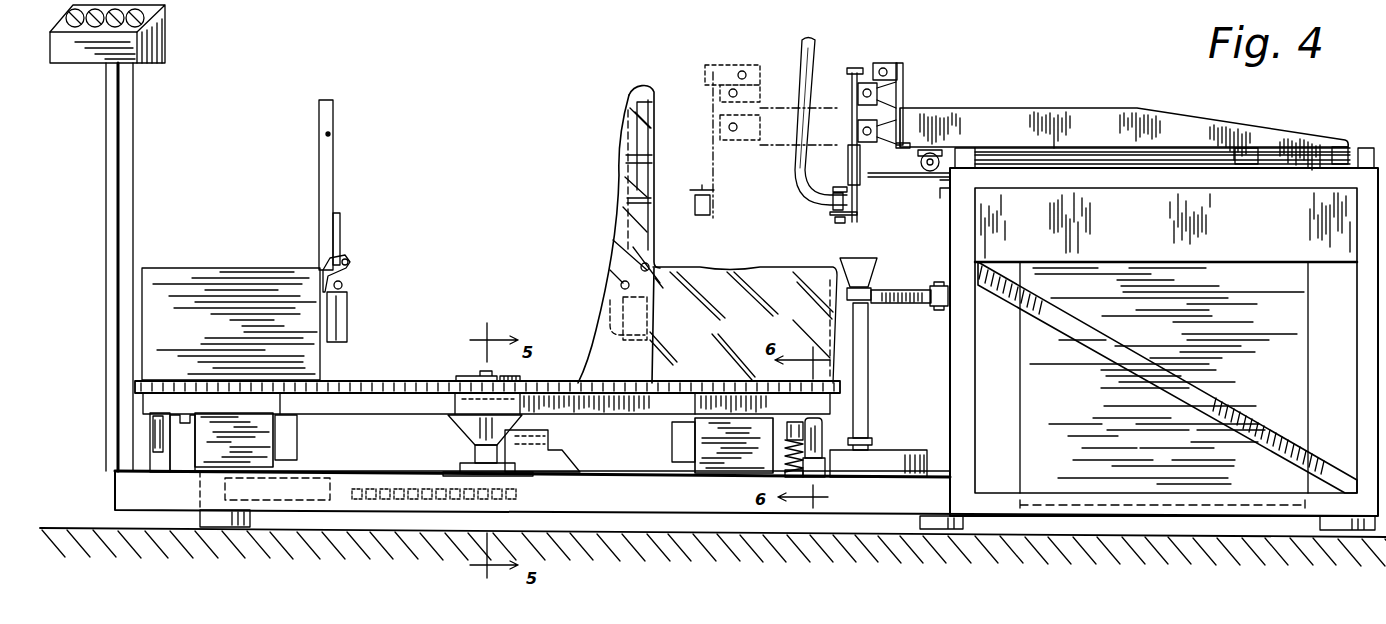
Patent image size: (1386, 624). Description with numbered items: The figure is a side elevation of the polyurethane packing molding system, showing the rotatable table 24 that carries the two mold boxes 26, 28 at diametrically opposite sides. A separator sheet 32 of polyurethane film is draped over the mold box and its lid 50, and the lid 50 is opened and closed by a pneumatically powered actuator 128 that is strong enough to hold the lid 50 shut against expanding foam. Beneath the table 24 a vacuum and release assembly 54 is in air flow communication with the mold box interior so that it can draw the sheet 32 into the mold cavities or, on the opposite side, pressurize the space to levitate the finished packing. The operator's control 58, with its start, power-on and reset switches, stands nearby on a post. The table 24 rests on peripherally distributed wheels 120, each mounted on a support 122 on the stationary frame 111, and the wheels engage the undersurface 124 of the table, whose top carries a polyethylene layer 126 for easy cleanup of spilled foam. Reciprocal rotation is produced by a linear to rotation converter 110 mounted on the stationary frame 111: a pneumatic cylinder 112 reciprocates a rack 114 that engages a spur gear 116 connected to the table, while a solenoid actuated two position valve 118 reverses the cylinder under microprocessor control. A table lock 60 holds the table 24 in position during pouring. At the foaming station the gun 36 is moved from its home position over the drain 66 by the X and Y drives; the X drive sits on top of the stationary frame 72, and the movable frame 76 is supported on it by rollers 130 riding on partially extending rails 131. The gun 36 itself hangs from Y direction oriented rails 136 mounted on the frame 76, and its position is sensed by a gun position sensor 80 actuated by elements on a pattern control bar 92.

The table 24 is at (545, 390).
The mold box 26 is at (307, 362).
The mold box 28 is at (690, 345).
The separator sheet 32 is at (624, 122).
The gun 36 is at (840, 206).
The lid 50 is at (331, 136).
The vacuum and release assembly 54 is at (265, 435).
The control 58 is at (158, 42).
The table lock 60 is at (778, 457).
The drain 66 is at (876, 268).
The frame 72 is at (1120, 500).
The frame 76 is at (1100, 108).
The gun position sensor 80 is at (855, 68).
The pattern control bar 92 is at (886, 68).
The linear to rotation converter 110 is at (341, 463).
The stationary frame 111 is at (625, 500).
The pneumatic cylinder 112 is at (290, 494).
The rack 114 is at (390, 487).
The spur gear 116 is at (480, 490).
The two position valve 118 is at (198, 492).
The wheel 120 is at (150, 418).
The support 122 is at (157, 463).
The undersurface 124 is at (418, 404).
The layer 126 is at (410, 378).
The actuator 128 is at (337, 312).
The roller 130 is at (920, 162).
The rail 131 is at (912, 180).
The rail 136 is at (850, 95).